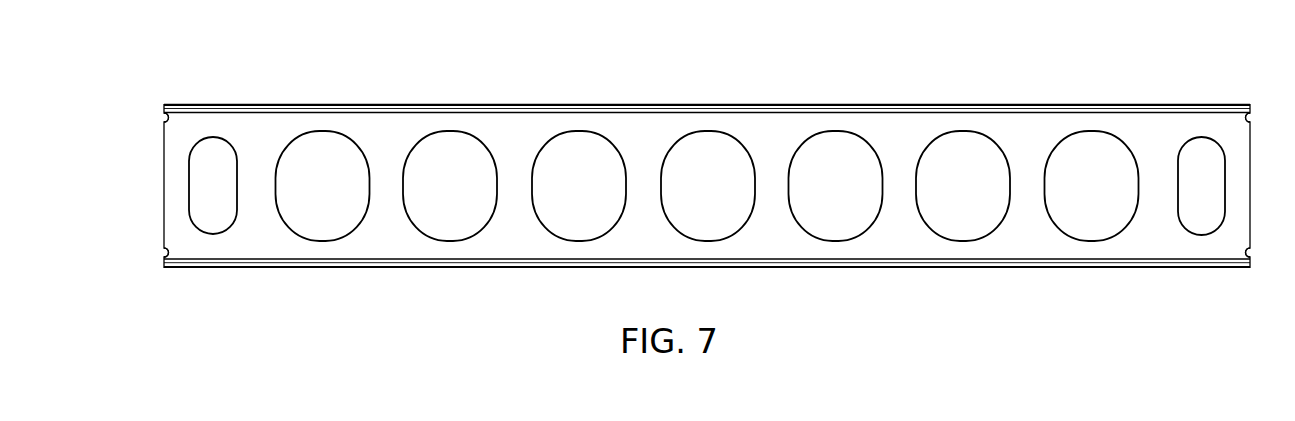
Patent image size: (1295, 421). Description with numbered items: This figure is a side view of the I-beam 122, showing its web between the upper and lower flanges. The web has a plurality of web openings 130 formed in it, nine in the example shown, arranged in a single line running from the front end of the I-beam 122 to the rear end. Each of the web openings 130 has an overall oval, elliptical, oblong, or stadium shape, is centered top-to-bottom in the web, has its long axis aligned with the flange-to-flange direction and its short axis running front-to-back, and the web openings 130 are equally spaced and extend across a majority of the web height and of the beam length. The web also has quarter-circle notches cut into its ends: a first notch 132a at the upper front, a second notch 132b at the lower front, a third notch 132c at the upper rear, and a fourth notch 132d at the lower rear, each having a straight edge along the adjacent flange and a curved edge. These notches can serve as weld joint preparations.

The I-beam 122 is at (412, 55).
The web openings 130 is at (565, 214).
The first notch 132a is at (163, 118).
The second notch 132b is at (163, 253).
The third notch 132c is at (1250, 117).
The fourth notch 132d is at (1250, 256).